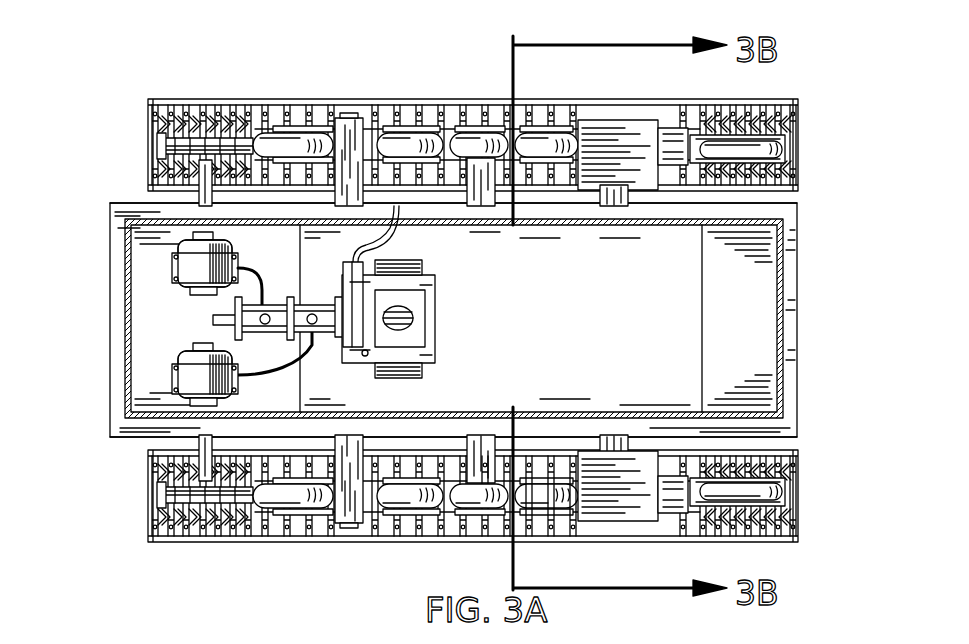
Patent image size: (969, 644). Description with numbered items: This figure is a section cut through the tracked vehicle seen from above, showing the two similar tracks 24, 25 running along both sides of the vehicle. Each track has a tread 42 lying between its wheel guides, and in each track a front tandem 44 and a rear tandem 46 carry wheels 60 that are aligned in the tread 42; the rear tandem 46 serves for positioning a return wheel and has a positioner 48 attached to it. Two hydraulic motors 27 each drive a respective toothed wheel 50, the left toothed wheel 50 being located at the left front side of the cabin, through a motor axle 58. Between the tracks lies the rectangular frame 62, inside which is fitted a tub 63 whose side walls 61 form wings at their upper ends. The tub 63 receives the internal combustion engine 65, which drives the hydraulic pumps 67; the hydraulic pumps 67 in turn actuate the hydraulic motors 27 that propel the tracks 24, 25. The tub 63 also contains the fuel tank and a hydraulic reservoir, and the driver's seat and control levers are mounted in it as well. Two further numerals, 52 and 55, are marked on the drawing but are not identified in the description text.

The track 24 is at (150, 528).
The track 25 is at (148, 143).
The hydraulic motor 27 is at (193, 378).
The tread 42 is at (262, 548).
The front tandem 44 is at (333, 548).
The rear tandem 46 is at (615, 465).
The positioner 48 is at (637, 500).
The toothed wheel 50 is at (152, 500).
The frame member 52 is at (553, 100).
The track roller 55 is at (478, 500).
The motor axle 58 is at (170, 452).
The wheels 60 is at (400, 548).
The side walls 61 is at (747, 213).
The rectangular frame 62 is at (792, 320).
The tub 63 is at (667, 310).
The internal combustion engine 65 is at (405, 298).
The hydraulic pumps 67 is at (270, 308).